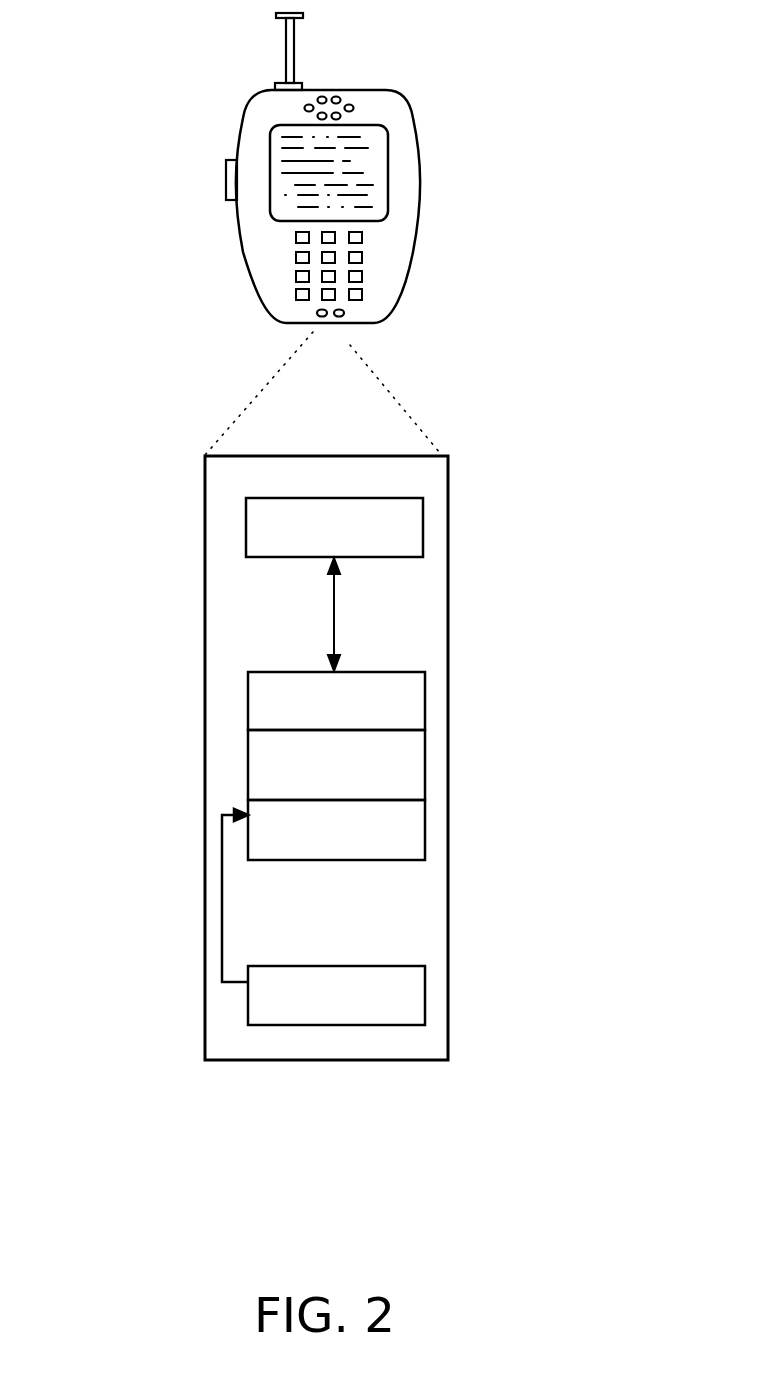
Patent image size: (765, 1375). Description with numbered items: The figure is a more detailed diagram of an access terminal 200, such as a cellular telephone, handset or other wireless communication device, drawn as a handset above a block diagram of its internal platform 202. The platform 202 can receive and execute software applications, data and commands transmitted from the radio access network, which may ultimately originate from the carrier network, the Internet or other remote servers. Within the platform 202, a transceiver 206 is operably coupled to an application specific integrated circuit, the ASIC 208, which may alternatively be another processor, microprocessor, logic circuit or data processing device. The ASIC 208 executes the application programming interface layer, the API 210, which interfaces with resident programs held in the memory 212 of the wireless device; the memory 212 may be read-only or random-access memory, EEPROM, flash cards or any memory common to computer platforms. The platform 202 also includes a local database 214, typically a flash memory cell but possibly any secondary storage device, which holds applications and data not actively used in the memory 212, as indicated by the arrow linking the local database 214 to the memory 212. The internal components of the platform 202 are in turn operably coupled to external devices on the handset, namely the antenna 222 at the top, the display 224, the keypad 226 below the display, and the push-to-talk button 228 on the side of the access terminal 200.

The access terminal 200 is at (396, 313).
The platform 202 is at (205, 660).
The transceiver 206 is at (423, 515).
The application specific integrated circuit 208 is at (425, 697).
The application programming interface 210 is at (425, 748).
The memory 212 is at (425, 817).
The local database 214 is at (425, 965).
The antenna 222 is at (293, 28).
The display 224 is at (390, 173).
The keypad 226 is at (363, 257).
The push-to-talk button 228 is at (226, 171).